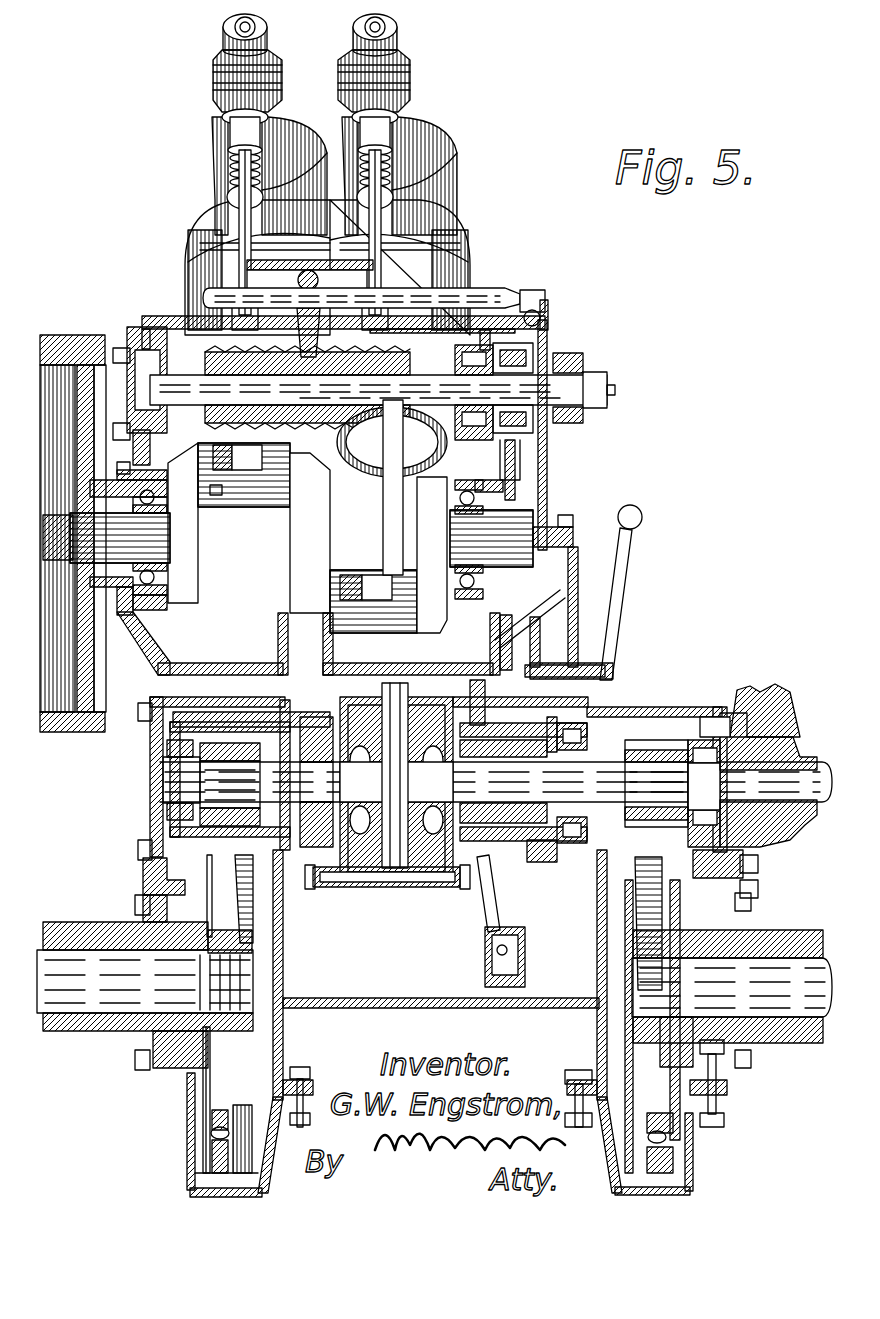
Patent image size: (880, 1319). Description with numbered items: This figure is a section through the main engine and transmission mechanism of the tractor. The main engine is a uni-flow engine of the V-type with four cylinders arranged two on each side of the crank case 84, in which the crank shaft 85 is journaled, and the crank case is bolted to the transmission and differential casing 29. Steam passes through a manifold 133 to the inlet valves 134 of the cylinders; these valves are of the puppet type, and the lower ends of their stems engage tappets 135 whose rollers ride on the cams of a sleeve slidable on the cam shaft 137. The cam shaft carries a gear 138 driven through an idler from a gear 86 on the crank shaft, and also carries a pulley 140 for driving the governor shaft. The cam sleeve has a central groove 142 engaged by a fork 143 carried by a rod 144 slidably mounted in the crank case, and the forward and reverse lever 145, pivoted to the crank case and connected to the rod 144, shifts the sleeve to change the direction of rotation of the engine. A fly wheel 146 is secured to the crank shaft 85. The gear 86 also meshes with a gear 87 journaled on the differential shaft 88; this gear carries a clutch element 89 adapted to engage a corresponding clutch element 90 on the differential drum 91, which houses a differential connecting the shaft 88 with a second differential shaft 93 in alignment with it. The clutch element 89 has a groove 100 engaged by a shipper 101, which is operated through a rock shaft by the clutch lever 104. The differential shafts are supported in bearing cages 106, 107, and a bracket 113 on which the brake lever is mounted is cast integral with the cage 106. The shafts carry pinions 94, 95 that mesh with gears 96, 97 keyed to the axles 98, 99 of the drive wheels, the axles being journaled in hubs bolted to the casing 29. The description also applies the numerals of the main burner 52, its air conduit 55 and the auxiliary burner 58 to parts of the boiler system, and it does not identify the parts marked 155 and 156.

The manifold 133 is at (357, 27).
The auxiliary burner 58 is at (403, 155).
The inlet valves 134 is at (232, 215).
The fork 143 is at (300, 308).
The tappets 135 is at (245, 318).
The fly wheel 146 is at (65, 335).
The central groove 142 is at (158, 330).
The rocker arm 155 is at (470, 278).
The rocker support 156 is at (440, 293).
The rod 144 is at (500, 290).
The forward and reverse lever 145 is at (545, 318).
The pulley 140 is at (570, 360).
The cam shaft 137 is at (570, 385).
The gear 138 is at (575, 420).
The crank case 84 is at (548, 447).
The gear 86 is at (520, 500).
The crank shaft 85 is at (520, 530).
The clutch lever 104 is at (622, 565).
The gear 87 is at (545, 605).
The clutch element 90 is at (540, 665).
The clutch element 89 is at (590, 680).
The groove 100 is at (582, 708).
The differential shaft 88 is at (648, 715).
The bearing cage 106 is at (665, 735).
The pinion 94 is at (735, 700).
The bracket 113 is at (770, 688).
The second differential shaft 93 is at (270, 700).
The differential drum 91 is at (365, 702).
The pinion 95 is at (205, 745).
The bearing cage 107 is at (165, 780).
The gear 97 is at (215, 875).
The conduit 55 is at (127, 925).
The axle 99 is at (115, 1000).
The shipper 101 is at (525, 913).
The transmission and differential casing 29 is at (598, 908).
The gear 96 is at (690, 880).
The main burner 52 is at (770, 935).
The axle 98 is at (763, 1010).